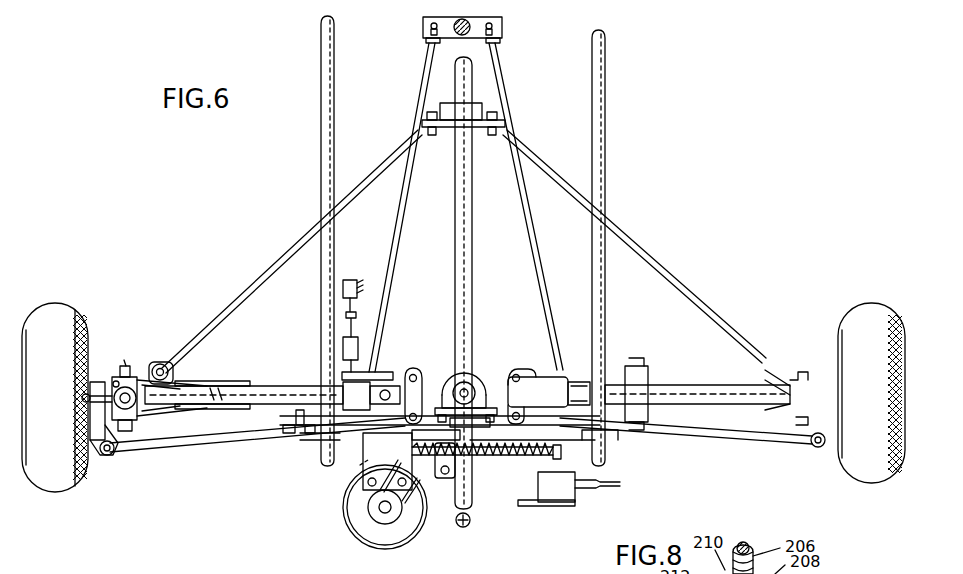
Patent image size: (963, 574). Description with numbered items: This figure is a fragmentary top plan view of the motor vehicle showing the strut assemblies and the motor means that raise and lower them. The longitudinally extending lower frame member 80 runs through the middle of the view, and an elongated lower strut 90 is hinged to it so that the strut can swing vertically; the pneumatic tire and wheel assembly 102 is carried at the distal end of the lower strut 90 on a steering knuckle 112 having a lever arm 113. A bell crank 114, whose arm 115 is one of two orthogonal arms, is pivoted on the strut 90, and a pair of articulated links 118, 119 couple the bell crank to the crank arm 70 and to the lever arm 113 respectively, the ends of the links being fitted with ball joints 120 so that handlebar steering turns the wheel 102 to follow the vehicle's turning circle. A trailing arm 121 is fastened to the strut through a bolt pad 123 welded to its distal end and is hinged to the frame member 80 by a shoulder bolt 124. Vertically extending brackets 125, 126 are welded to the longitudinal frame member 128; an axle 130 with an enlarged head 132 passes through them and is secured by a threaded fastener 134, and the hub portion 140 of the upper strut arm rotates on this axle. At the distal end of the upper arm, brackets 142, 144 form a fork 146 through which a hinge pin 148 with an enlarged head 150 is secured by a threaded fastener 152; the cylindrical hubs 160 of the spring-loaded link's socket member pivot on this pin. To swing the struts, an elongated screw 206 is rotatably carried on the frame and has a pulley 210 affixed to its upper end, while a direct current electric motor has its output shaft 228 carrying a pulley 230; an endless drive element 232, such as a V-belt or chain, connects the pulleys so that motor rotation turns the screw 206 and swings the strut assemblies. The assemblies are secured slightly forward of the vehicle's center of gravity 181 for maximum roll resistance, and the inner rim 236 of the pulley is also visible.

The crank arm 70 is at (423, 22).
The ball joint 120 is at (498, 42).
The longitudinal frame member 128 is at (334, 90).
The lower frame member 80 is at (472, 186).
The shoulder bolt 124 is at (432, 112).
The trailing arm 121 is at (275, 250).
The articulated link 118 is at (537, 256).
The pneumatic tire and wheel assembly 102 is at (52, 310).
The bracket 144 is at (143, 420).
The hinge pin 148 is at (120, 366).
The threaded fastener 152 is at (128, 366).
The enlarged head 150 is at (128, 431).
The fork 146 is at (145, 380).
The bracket 142 is at (163, 362).
The bolt pad 123 is at (170, 378).
The bracket 125 is at (278, 418).
The steering knuckle 112 is at (95, 420).
The cylindrical hub 160 is at (112, 385).
The lever arm 113 is at (110, 456).
The articulated link 119 is at (722, 431).
The bracket 126 is at (278, 380).
The axle 130 is at (305, 372).
The enlarged head 132 is at (297, 372).
The bell crank 114 is at (410, 400).
The pulley 210 is at (446, 376).
The elongated screw 206 is at (466, 389).
The arm 115 is at (540, 376).
The threaded fastener 134 is at (288, 433).
The hub portion 140 is at (299, 428).
The lower strut 90 is at (310, 433).
The pulley 230 is at (375, 512).
The rim 236 is at (405, 525).
The output shaft 228 is at (385, 513).
The endless drive element 232 is at (425, 500).
The center of gravity 181 is at (470, 520).